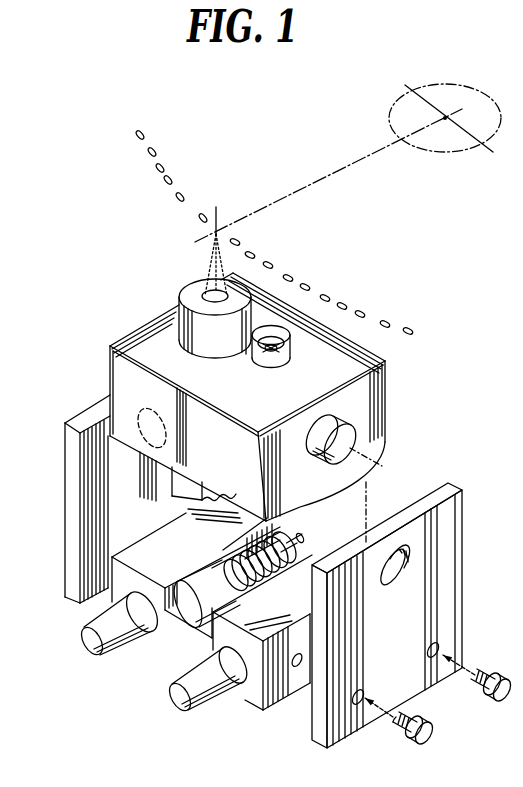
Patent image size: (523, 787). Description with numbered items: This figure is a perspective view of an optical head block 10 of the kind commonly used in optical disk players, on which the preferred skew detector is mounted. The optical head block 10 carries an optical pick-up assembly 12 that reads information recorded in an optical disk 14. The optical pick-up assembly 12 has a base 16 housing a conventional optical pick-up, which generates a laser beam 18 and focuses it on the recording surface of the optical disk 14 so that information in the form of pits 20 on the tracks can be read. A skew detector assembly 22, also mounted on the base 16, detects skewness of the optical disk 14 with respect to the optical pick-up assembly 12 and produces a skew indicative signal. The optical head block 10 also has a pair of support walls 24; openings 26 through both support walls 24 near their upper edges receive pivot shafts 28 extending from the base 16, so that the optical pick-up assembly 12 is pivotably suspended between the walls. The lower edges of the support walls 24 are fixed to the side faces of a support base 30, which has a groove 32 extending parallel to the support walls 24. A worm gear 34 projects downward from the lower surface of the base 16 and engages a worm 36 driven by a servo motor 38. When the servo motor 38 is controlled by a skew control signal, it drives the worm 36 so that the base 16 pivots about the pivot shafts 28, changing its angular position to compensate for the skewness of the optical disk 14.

The optical head block 10 is at (372, 325).
The optical pick-up assembly 12 is at (182, 320).
The optical disk 14 is at (217, 167).
The base 16 is at (378, 410).
The laser beam 18 is at (220, 241).
The pits 20 is at (327, 295).
The skew detector assembly 22 is at (280, 322).
The support walls 24 is at (68, 489).
The openings 26 is at (142, 440).
The pivot shafts 28 is at (350, 437).
The support base 30 is at (252, 697).
The groove 32 is at (207, 566).
The worm gear 34 is at (180, 485).
The worm 36 is at (260, 562).
The servo motor 38 is at (187, 615).